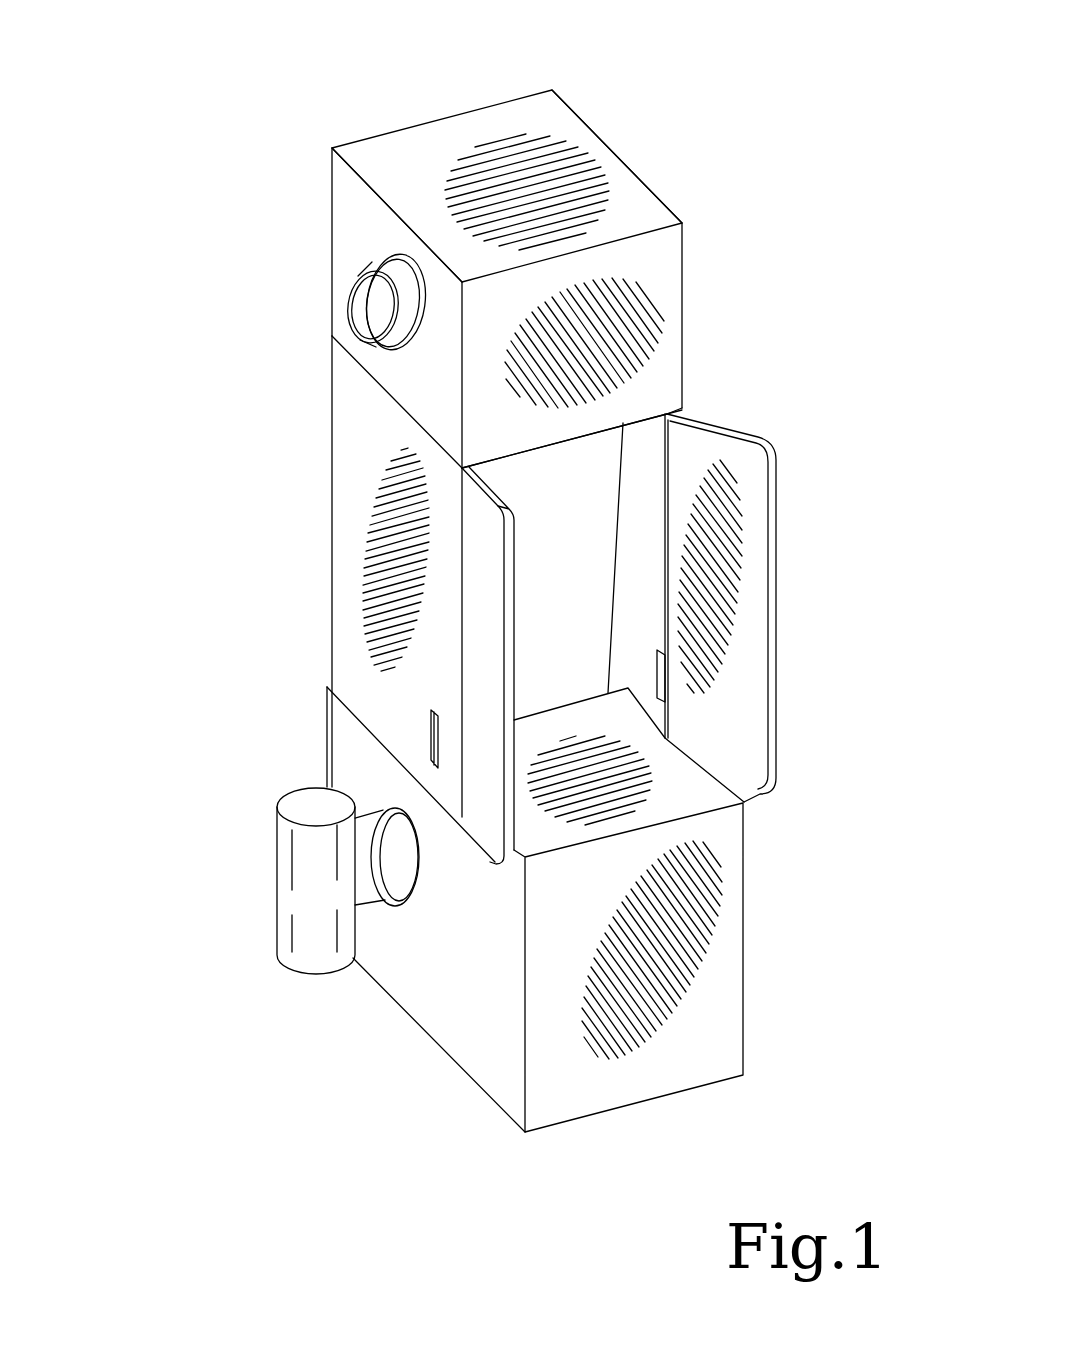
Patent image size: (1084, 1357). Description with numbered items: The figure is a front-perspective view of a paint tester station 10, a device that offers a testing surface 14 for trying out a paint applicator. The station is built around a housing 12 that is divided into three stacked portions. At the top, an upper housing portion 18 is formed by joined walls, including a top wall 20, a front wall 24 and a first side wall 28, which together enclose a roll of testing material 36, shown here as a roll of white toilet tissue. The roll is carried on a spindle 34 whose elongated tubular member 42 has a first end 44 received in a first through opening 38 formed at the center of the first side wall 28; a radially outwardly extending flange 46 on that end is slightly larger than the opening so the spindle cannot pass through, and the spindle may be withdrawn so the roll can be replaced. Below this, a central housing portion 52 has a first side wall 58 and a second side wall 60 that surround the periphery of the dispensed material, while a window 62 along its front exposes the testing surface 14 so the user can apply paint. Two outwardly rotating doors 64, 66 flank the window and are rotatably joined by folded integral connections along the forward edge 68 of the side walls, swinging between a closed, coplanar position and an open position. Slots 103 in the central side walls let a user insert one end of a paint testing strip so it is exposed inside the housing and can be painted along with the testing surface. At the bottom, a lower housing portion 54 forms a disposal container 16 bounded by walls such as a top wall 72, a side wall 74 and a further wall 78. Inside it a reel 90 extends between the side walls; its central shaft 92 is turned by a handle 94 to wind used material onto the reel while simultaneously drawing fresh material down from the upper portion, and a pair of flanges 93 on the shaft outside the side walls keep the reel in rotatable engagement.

The paint tester station 10 is at (155, 208).
The housing 12 is at (193, 632).
The testing surface 14 is at (592, 480).
The disposal container 16 is at (770, 968).
The upper housing portion 18 is at (500, 100).
The top wall 20 is at (568, 122).
The front wall 24 is at (665, 282).
The first side wall 28 is at (343, 193).
The spindle 34 is at (353, 285).
The testing material 36 is at (630, 495).
The first through opening 38 is at (360, 373).
The tubular member 42 is at (353, 300).
The first end 44 is at (370, 268).
The flange 46 is at (397, 255).
The central housing portion 52 is at (330, 605).
The lower housing portion 54 is at (460, 712).
The first side wall 58 is at (350, 437).
The second side wall 60 is at (647, 503).
The window 62 is at (637, 647).
The door 64 is at (430, 748).
The door 66 is at (773, 500).
The forward edge 68 is at (457, 690).
The top wall 72 is at (705, 797).
The side wall 74 is at (457, 1007).
The wall 78 is at (720, 1045).
The reel 90 is at (273, 915).
The central shaft 92 is at (377, 870).
The flanges 93 is at (403, 905).
The handle 94 is at (323, 820).
The slots 103 is at (327, 787).